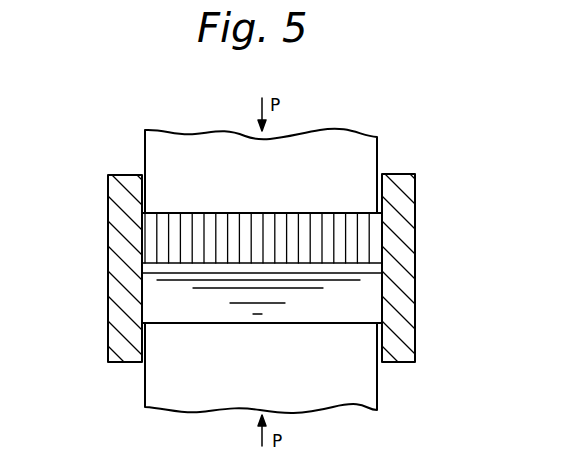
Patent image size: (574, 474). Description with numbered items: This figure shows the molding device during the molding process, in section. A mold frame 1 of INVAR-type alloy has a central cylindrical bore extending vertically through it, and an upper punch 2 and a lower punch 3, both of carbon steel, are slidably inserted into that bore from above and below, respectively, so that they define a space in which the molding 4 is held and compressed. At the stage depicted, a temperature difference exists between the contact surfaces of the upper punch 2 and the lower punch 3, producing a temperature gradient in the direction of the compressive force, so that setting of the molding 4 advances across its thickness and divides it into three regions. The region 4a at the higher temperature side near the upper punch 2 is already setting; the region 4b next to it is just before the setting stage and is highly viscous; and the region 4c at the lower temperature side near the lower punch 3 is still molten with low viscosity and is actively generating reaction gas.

The mold frame 1 is at (405, 202).
The upper punch 2 is at (363, 151).
The lower punch 3 is at (362, 387).
The molding 4 is at (261, 274).
The set region 4a is at (158, 240).
The highly viscous region 4b is at (153, 268).
The molten region 4c is at (162, 309).